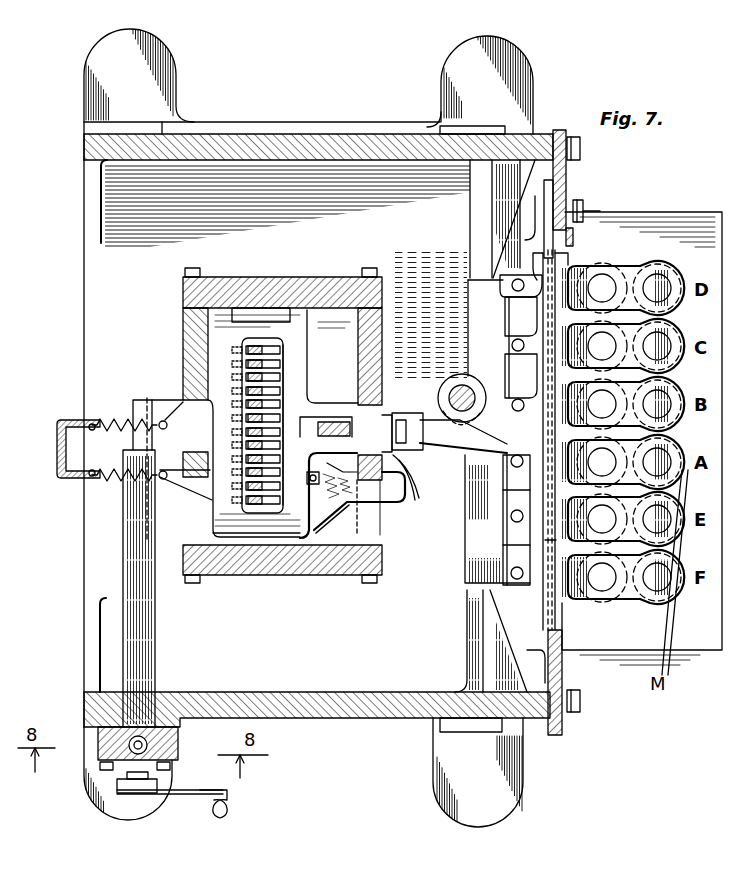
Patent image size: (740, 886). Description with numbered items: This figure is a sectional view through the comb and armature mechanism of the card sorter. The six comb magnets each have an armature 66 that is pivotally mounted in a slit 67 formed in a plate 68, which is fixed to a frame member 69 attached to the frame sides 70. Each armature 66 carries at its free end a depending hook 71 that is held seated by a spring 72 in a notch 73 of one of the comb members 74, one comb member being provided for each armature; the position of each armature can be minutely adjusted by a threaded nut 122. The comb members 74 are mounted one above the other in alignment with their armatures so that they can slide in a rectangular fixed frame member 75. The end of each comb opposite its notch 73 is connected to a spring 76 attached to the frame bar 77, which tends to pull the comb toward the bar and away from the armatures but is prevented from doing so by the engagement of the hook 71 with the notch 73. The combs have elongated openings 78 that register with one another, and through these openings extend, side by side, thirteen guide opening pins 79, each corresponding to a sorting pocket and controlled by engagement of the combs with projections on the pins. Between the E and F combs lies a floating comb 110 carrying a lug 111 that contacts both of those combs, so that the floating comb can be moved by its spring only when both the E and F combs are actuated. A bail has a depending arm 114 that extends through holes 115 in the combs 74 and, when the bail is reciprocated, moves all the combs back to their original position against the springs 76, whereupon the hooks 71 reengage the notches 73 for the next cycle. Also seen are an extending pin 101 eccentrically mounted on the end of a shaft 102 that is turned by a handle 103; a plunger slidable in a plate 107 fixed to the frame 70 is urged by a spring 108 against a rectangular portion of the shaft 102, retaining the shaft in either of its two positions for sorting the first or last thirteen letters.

The armature 66 is at (455, 434).
The slit 67 is at (548, 546).
The plate 68 is at (570, 191).
The frame member 69 is at (557, 129).
The frame sides 70 is at (274, 150).
The depending hook 71 is at (404, 450).
The spring 72 is at (508, 515).
The notch 73 is at (394, 457).
The comb member 74 is at (295, 352).
The fixed frame member 75 is at (236, 288).
The spring 76 is at (112, 422).
The frame bar 77 is at (60, 462).
The elongated opening 78 is at (267, 343).
The guide opening pin 79 is at (242, 376).
The extending pin 101 is at (143, 398).
The shaft 102 is at (136, 623).
The handle 103 is at (228, 794).
The plate 107 is at (98, 748).
The spring 108 is at (125, 742).
The floating comb 110 is at (390, 492).
The lug 111 is at (316, 486).
The depending arm 114 is at (334, 422).
The hole 115 is at (308, 423).
The threaded nut 122 is at (440, 392).